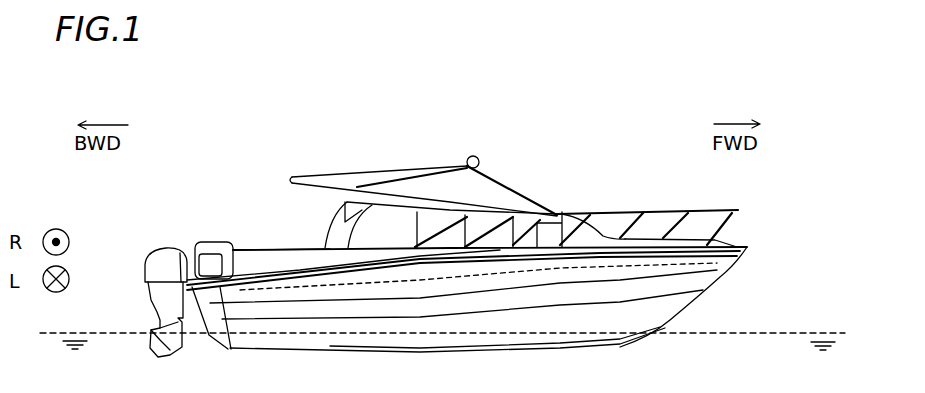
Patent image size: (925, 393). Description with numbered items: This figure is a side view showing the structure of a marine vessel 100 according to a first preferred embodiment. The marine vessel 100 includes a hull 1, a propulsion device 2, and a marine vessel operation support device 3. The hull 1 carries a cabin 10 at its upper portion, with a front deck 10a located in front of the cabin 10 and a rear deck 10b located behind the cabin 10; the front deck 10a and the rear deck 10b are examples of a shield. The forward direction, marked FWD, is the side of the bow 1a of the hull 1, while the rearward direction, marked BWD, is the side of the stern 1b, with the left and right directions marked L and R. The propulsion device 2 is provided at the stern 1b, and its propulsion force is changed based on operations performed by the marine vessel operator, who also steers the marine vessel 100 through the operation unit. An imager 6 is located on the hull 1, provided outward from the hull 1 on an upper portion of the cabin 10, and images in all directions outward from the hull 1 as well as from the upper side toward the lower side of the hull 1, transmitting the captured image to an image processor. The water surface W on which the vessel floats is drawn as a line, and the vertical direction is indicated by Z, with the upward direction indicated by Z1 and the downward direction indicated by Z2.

The marine vessel 100 is at (201, 61).
The hull 1 is at (556, 104).
The bow 1a is at (748, 247).
The stern 1b is at (182, 252).
The propulsion device 2 is at (143, 277).
The marine vessel operation support device 3 is at (563, 214).
The imager 6 is at (474, 156).
The cabin 10 is at (513, 178).
The front deck 10a is at (650, 240).
The rear deck 10b is at (278, 277).
The water surface W is at (768, 333).
The vertical direction Z is at (827, 173).
The upward direction Z1 is at (819, 181).
The downward direction Z2 is at (815, 216).